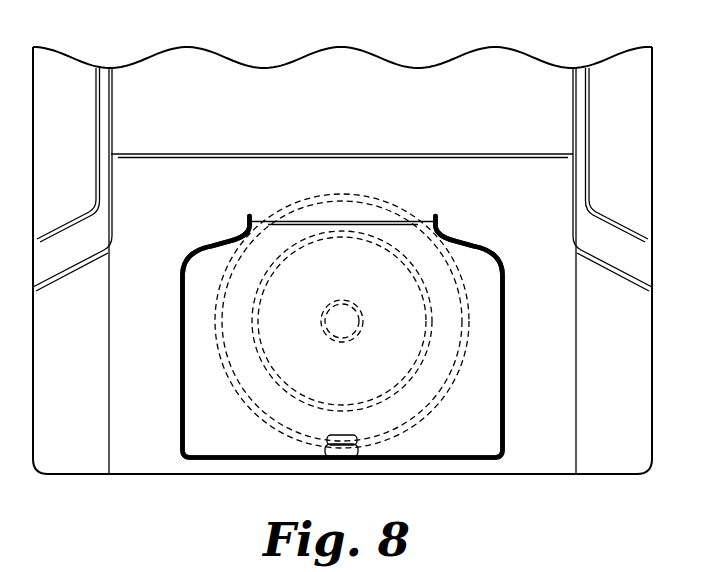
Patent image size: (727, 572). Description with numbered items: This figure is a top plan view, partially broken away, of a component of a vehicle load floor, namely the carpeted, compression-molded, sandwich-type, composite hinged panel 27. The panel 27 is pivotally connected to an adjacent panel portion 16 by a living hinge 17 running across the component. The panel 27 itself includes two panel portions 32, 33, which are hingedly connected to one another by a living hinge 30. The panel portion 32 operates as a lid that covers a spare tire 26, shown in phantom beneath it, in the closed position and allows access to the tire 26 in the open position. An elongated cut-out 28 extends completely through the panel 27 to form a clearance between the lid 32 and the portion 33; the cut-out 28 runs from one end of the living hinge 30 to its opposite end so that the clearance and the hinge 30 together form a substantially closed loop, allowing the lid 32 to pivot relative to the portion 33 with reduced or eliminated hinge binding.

The panel portion 16 is at (524, 72).
The living hinge 17 is at (538, 153).
The spare tire 26 is at (433, 398).
The hinged panel 27 is at (557, 389).
The cut-out 28 is at (212, 250).
The living hinge 30 is at (343, 223).
The panel portion 32 is at (480, 435).
The panel portion 33 is at (555, 335).